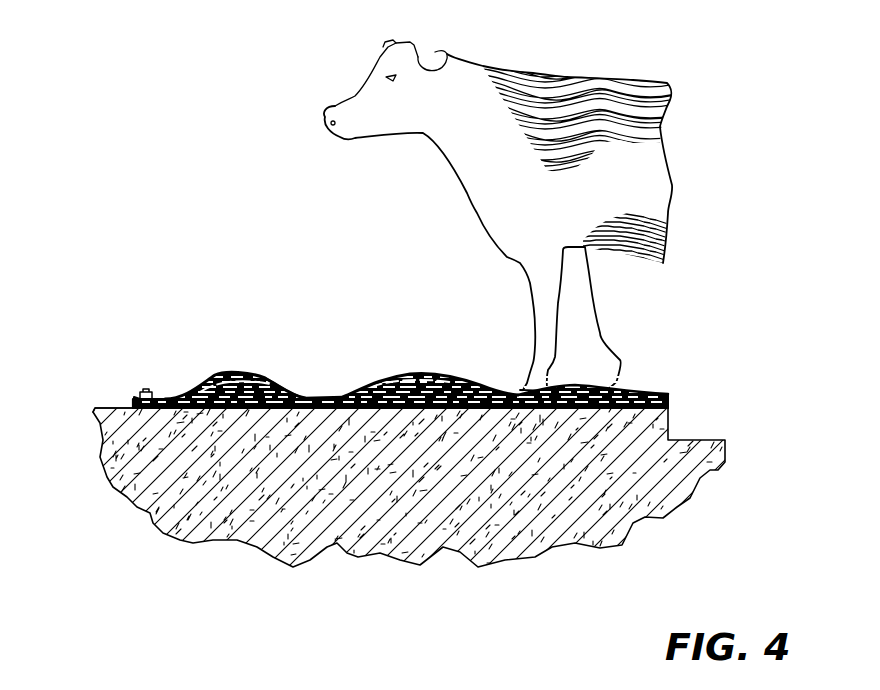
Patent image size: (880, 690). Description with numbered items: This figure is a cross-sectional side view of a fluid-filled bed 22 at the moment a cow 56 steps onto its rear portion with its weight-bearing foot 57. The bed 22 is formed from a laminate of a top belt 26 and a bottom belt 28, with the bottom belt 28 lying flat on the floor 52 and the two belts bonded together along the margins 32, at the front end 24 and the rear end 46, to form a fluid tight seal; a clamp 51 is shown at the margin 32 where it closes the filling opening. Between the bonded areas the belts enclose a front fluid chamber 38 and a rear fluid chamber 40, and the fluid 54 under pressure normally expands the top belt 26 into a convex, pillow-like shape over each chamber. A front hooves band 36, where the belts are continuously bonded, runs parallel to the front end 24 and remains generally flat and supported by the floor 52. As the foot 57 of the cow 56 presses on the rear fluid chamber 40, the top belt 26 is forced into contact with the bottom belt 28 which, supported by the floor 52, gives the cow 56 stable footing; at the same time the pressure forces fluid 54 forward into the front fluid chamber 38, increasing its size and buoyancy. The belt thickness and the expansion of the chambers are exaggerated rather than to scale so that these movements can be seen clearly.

The bed 22 is at (150, 297).
The front end 24 is at (133, 404).
The top belt 26 is at (214, 368).
The bottom belt 28 is at (317, 410).
The margins 32 is at (134, 397).
The front hooves band 36 is at (347, 397).
The front fluid chamber 38 is at (240, 373).
The rear fluid chamber 40 is at (467, 375).
The rear end 46 is at (670, 397).
The clamp 51 is at (143, 391).
The floor 52 is at (120, 409).
The fluid 54 is at (417, 390).
The cow 56 is at (463, 77).
The hoof 57 is at (530, 387).